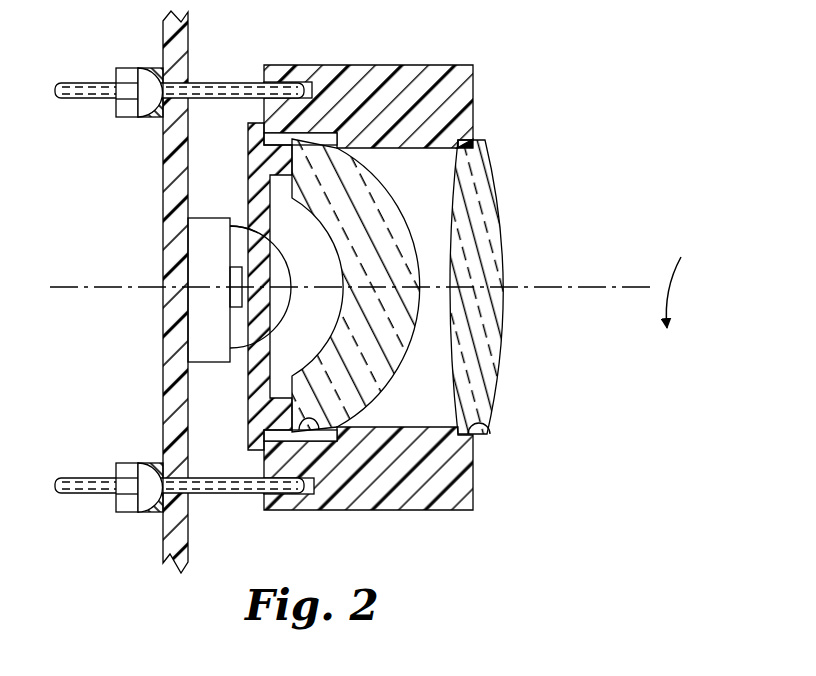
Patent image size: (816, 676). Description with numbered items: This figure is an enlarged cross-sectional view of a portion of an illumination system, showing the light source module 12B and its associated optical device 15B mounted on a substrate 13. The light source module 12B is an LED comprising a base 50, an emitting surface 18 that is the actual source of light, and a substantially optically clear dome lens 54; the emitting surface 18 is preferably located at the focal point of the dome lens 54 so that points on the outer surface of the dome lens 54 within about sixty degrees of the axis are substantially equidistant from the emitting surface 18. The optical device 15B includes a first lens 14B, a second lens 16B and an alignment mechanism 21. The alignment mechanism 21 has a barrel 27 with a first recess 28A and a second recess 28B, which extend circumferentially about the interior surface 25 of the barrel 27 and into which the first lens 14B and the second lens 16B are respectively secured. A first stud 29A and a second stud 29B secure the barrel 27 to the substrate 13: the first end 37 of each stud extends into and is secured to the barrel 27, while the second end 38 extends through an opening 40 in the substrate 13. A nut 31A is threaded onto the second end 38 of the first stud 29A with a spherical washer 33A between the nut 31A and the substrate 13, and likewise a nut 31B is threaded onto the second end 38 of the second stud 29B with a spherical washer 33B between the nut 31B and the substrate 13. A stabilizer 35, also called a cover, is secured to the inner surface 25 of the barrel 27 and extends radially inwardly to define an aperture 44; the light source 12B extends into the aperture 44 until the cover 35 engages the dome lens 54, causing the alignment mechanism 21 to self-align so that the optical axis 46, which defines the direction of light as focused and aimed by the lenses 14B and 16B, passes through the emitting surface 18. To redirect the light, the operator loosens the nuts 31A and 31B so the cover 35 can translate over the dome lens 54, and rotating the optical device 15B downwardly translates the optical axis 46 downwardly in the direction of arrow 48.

The light source module 12B is at (197, 292).
The substrate 13 is at (174, 392).
The first lens 14B is at (418, 258).
The optical device 15B is at (467, 78).
The second lens 16B is at (492, 318).
The emitting surface 18 is at (225, 300).
The alignment mechanism 21 is at (407, 280).
The interior surface 25 is at (430, 150).
The barrel 27 is at (420, 500).
The first recess 28A is at (316, 420).
The second recess 28B is at (487, 425).
The first stud 29A is at (152, 76).
The second stud 29B is at (146, 501).
The nut 31A is at (118, 110).
The nut 31B is at (153, 505).
The spherical washer 33A is at (155, 67).
The spherical washer 33B is at (128, 468).
The stabilizer 35 is at (251, 187).
The first end 37 is at (291, 88).
The second end 38 is at (72, 88).
The opening 40 is at (175, 107).
The aperture 44 is at (276, 236).
The optical axis 46 is at (608, 286).
The arrow 48 is at (690, 280).
The base 50 is at (203, 337).
The dome lens 54 is at (237, 251).